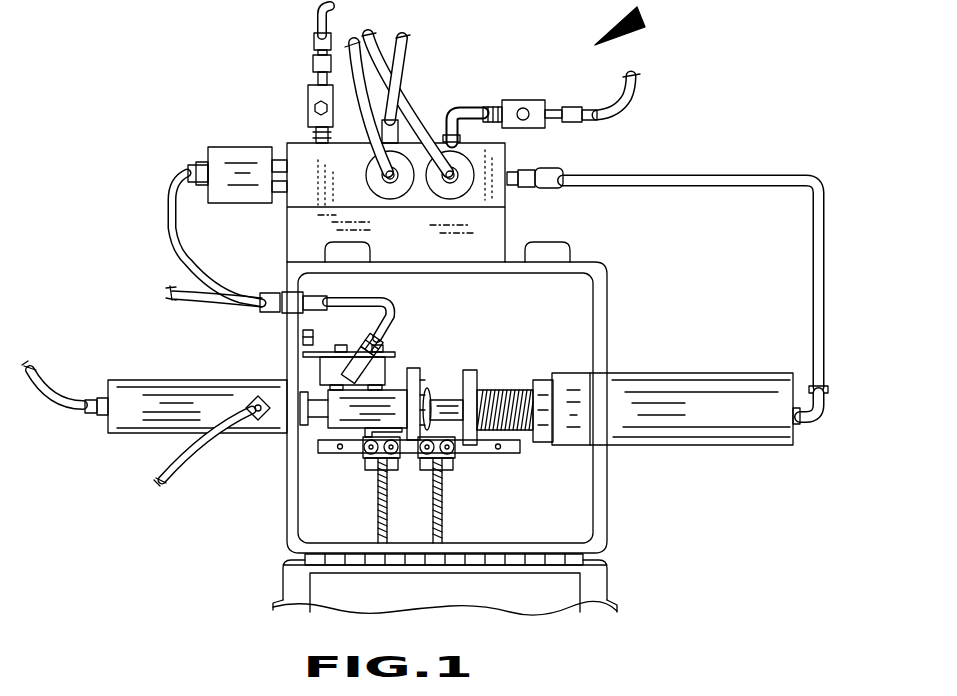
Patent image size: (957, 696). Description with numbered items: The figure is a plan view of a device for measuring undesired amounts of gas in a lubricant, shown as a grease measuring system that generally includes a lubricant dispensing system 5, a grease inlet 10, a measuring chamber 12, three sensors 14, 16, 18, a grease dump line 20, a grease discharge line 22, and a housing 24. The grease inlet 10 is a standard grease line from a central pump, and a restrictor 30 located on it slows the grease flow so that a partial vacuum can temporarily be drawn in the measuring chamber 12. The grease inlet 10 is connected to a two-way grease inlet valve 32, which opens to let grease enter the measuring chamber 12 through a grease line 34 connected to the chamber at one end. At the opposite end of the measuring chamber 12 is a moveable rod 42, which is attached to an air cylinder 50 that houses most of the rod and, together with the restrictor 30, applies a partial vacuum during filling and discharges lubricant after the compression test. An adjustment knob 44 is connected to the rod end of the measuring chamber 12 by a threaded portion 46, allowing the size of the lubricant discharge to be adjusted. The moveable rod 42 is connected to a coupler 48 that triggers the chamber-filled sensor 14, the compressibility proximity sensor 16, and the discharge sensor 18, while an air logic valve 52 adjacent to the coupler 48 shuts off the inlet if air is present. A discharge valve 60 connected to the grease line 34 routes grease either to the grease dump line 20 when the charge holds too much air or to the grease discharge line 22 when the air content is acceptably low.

The lubricant dispensing system 5 is at (640, 18).
The grease inlet 10 is at (637, 86).
The measuring chamber 12 is at (753, 425).
The chamber-filled sensor 14 is at (366, 457).
The compressibility proximity sensor 16 is at (423, 461).
The discharge sensor 18 is at (366, 426).
The grease dump line 20 is at (319, 21).
The grease discharge line 22 is at (409, 46).
The housing 24 is at (598, 545).
The restrictor 30 is at (533, 100).
The two-way grease inlet valve 32 is at (460, 188).
The grease line 34 is at (814, 276).
The moveable rod 42 is at (443, 400).
The adjustment knob 44 is at (470, 447).
The threaded portion 46 is at (507, 389).
The coupler 48 is at (395, 398).
The air cylinder 50 is at (127, 408).
The air logic valve 52 is at (323, 365).
The discharge valve 60 is at (373, 175).